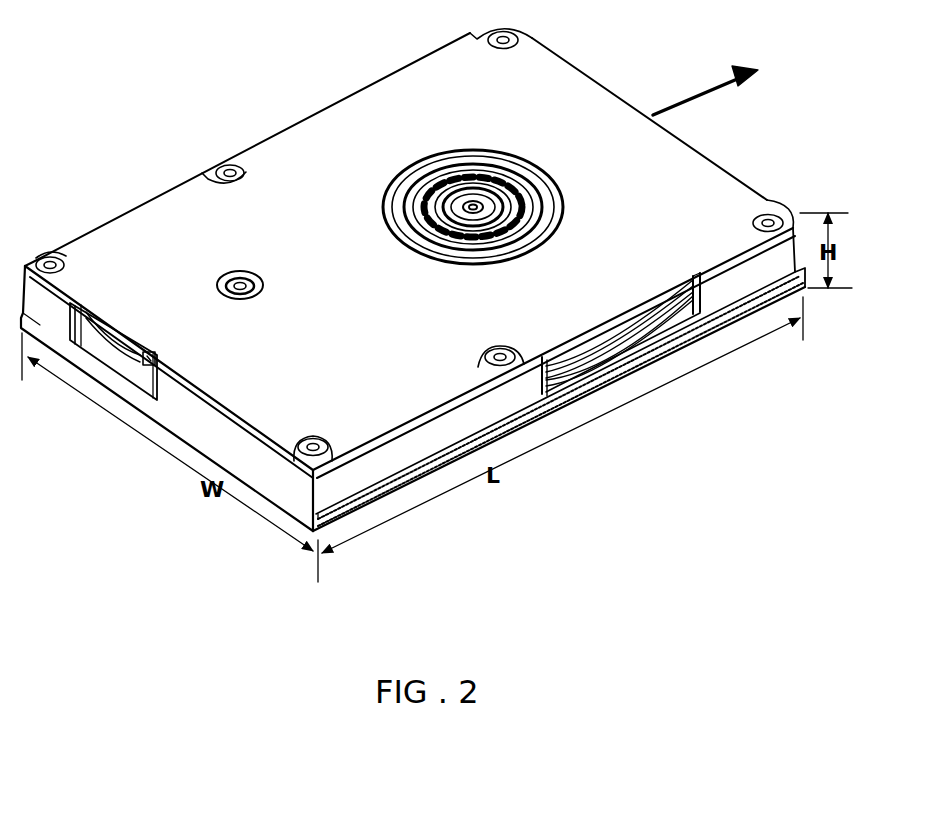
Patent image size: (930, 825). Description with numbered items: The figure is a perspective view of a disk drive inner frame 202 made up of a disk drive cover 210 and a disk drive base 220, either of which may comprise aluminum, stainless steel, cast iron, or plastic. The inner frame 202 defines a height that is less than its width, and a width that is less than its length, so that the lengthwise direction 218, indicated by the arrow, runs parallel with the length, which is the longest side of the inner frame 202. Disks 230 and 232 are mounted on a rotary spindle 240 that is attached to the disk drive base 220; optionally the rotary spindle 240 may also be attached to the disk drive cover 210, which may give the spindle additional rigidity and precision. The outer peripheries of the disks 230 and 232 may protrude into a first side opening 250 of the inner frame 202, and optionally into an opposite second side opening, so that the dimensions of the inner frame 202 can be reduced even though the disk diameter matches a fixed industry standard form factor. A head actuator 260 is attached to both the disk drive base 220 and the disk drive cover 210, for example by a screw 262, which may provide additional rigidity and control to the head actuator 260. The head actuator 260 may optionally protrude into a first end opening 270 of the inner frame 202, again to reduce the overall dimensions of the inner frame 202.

The disk drive inner frame 202 is at (220, 56).
The disk drive cover 210 is at (358, 103).
The lengthwise direction 218 is at (698, 94).
The disk drive base 220 is at (400, 447).
The disk 230 is at (603, 327).
The disk 232 is at (640, 327).
The rotary spindle 240 is at (540, 205).
The first side opening 250 is at (700, 297).
The head actuator 260 is at (110, 323).
The screw 262 is at (246, 278).
The first end opening 270 is at (143, 380).